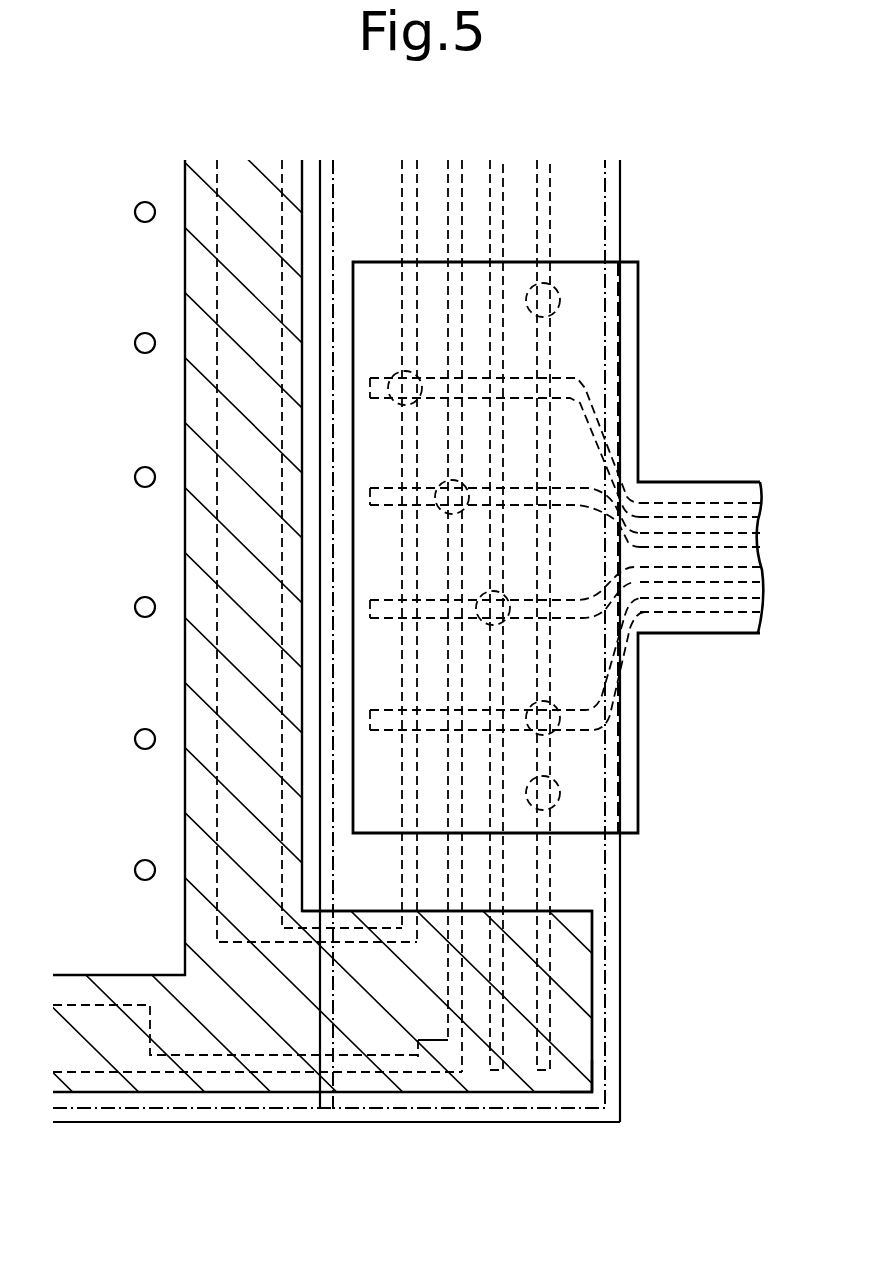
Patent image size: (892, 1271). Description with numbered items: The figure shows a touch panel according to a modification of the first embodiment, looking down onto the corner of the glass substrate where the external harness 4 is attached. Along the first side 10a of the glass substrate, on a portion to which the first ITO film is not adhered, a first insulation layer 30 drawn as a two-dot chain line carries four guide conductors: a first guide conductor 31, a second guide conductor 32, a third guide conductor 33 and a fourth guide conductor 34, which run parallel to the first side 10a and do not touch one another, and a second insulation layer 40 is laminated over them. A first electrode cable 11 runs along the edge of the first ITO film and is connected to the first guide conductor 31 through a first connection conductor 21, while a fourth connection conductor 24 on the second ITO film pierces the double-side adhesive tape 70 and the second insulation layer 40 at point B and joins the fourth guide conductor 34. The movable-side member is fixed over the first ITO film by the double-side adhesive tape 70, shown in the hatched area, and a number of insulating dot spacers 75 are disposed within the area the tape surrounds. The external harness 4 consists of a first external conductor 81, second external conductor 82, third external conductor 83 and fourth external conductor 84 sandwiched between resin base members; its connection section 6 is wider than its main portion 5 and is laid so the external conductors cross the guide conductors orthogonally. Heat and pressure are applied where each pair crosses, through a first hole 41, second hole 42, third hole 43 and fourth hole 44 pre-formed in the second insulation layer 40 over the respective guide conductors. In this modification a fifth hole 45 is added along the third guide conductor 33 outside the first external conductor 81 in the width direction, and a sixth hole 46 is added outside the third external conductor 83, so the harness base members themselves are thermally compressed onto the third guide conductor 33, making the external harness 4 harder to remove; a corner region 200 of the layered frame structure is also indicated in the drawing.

The external harness 4 is at (745, 340).
The main portion 5 is at (704, 482).
The connection section 6 is at (630, 366).
The first side 10a is at (640, 300).
The first electrode cable 11 is at (212, 178).
The first connection conductor 21 is at (362, 925).
The fourth connection conductor 24 is at (233, 1063).
The first insulation layer 30 is at (612, 848).
The second insulation layer 40 is at (336, 641).
The first guide conductor 31 is at (406, 160).
The second guide conductor 32 is at (500, 160).
The third guide conductor 33 is at (546, 160).
The fourth guide conductor 34 is at (456, 160).
The first hole 41 is at (414, 372).
The second hole 42 is at (502, 594).
The third hole 43 is at (556, 705).
The fourth hole 44 is at (460, 482).
The fifth hole 45 is at (556, 284).
The sixth hole 46 is at (562, 790).
The double-side adhesive tape 70 is at (186, 536).
The dot spacers 75 is at (135, 212).
The first external conductor 81 is at (400, 374).
The second external conductor 82 is at (396, 600).
The third external conductor 83 is at (396, 710).
The fourth external conductor 84 is at (396, 488).
The corner portion 200 is at (578, 1093).
The point B is at (442, 1058).